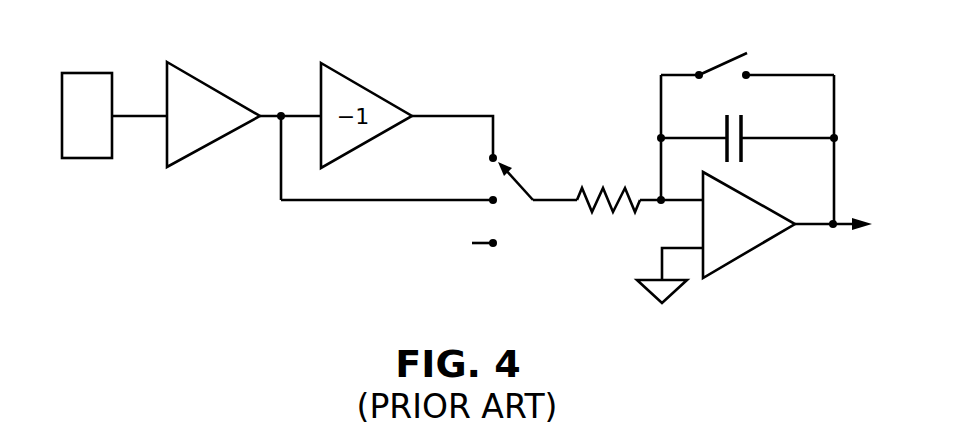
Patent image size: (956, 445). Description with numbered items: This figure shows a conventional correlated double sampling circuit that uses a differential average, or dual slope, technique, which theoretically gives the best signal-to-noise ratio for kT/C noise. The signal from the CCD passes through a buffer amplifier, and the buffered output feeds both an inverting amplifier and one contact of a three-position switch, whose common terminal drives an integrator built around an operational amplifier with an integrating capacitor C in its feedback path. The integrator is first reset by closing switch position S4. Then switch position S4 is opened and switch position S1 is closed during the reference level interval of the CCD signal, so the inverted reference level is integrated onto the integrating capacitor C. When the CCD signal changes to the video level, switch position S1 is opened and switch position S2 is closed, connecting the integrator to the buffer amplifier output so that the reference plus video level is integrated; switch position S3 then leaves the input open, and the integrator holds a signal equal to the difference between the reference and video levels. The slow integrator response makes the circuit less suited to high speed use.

The element CCD is at (86, 95).
The switch position S1 is at (461, 144).
The switch position S2 is at (389, 188).
The switch position S3 is at (461, 245).
The switch position S4 is at (747, 53).
The integrating capacitor C is at (747, 128).